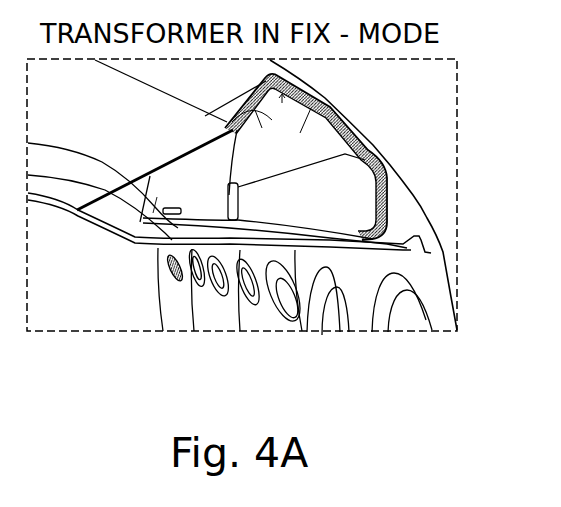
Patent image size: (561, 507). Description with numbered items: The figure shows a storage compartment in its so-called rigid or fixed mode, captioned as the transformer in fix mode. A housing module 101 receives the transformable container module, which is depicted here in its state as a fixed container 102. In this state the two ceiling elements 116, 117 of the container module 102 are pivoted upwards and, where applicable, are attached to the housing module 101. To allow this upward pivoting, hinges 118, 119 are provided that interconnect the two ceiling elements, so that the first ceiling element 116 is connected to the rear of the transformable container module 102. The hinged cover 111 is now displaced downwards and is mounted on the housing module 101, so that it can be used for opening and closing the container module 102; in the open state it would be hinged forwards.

The housing module 101 is at (368, 133).
The fixed container 102 is at (343, 192).
The hinged cover 111 is at (145, 227).
The first ceiling element 116 is at (333, 130).
The second ceiling element 117 is at (327, 99).
The hinge 118 is at (272, 188).
The hinge 119 is at (240, 104).